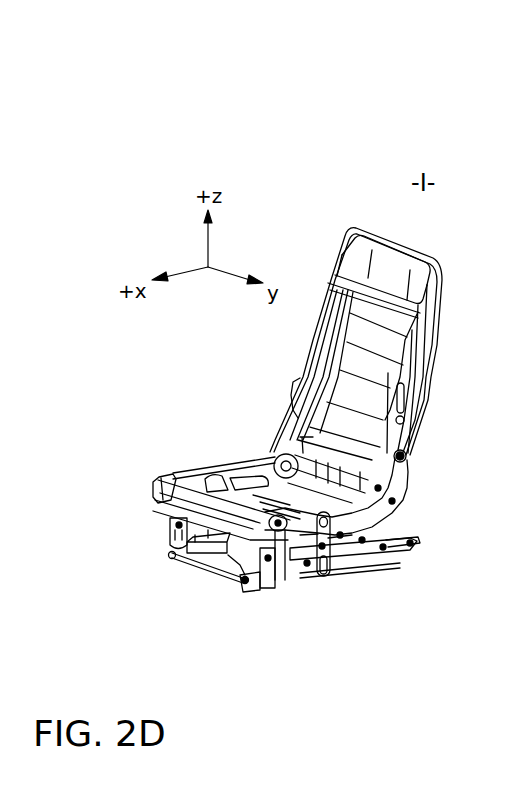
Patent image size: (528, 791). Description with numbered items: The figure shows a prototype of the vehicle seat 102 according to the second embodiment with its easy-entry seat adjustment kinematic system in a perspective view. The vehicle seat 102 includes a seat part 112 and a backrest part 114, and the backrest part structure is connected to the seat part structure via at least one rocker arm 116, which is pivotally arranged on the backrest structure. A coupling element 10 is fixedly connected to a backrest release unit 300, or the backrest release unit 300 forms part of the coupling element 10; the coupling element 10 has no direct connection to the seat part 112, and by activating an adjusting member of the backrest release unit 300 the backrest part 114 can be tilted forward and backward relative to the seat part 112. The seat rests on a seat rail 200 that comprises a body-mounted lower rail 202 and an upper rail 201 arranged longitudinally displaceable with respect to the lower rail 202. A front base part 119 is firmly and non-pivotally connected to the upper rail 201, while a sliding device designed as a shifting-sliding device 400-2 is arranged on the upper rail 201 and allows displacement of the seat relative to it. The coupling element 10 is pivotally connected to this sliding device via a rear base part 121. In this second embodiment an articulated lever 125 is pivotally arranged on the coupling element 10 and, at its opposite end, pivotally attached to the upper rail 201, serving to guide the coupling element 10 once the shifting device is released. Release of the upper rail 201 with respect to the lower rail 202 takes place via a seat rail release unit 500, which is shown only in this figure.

The vehicle seat 102 is at (357, 166).
The backrest part 114 is at (444, 291).
The seat part 112 is at (201, 470).
The rocker arm 116 is at (403, 455).
The backrest release unit 300 is at (394, 500).
The rear base part 121 is at (384, 546).
The seat rail 200 is at (442, 526).
The lower rail 202 is at (412, 544).
The upper rail 201 is at (385, 549).
The coupling element 10 is at (324, 548).
The articulated lever 125 is at (341, 537).
The shifting-sliding device 400-2 is at (308, 566).
The front base part 119 is at (177, 528).
The seat rail release unit 500 is at (244, 585).